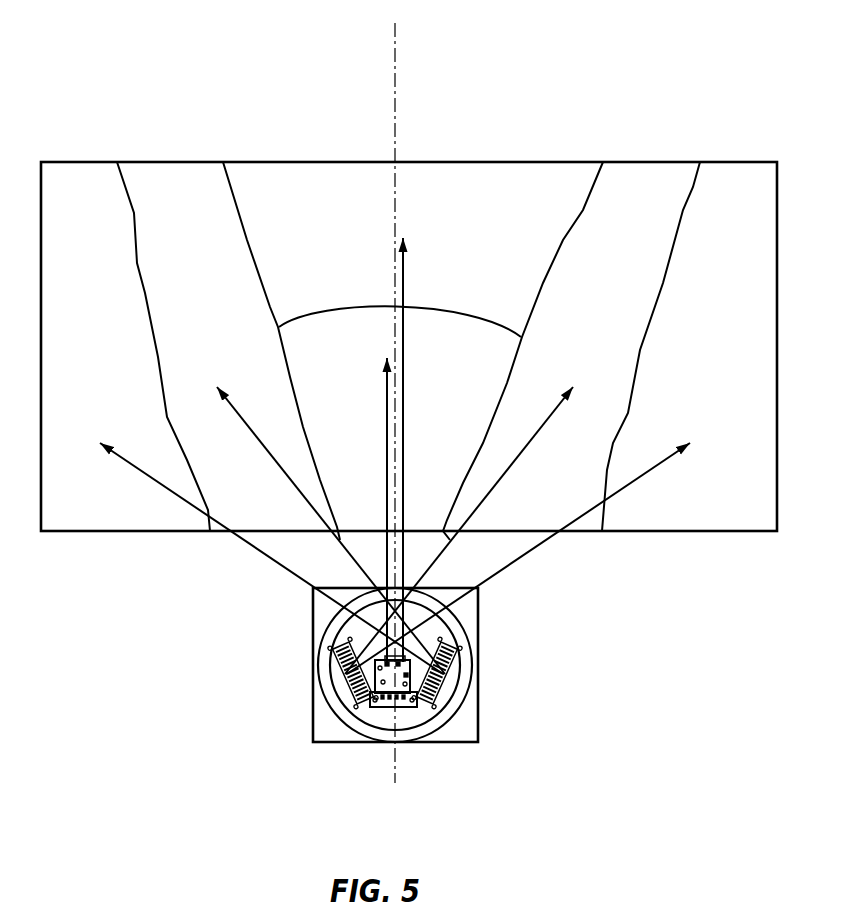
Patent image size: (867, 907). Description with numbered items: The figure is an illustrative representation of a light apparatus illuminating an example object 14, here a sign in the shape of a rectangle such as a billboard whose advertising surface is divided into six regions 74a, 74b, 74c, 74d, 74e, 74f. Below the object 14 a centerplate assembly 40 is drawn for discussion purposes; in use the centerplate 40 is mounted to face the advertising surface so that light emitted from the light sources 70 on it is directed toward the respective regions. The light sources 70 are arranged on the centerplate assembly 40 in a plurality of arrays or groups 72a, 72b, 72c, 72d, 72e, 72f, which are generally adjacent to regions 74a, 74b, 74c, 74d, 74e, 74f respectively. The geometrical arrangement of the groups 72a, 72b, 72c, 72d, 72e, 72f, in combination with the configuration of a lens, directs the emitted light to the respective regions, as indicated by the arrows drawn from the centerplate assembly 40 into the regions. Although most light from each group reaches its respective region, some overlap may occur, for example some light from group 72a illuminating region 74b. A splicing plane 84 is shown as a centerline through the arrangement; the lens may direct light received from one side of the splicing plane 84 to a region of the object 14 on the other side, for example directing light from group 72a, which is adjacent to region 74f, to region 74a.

The object 14 is at (635, 162).
The splicing plane 84 is at (394, 100).
The centerplate assembly 40 is at (333, 712).
The light sources 70 is at (412, 690).
The group of light sources 72a is at (452, 660).
The group of light sources 72b is at (447, 643).
The group of light sources 72c is at (380, 655).
The group of light sources 72d is at (395, 708).
The group of light sources 72e is at (337, 643).
The group of light sources 72f is at (333, 660).
The region of the advertising surface 74a is at (119, 277).
The region of the advertising surface 74b is at (218, 257).
The region of the advertising surface 74c is at (368, 354).
The region of the advertising surface 74d is at (493, 228).
The region of the advertising surface 74e is at (640, 262).
The region of the advertising surface 74f is at (742, 277).